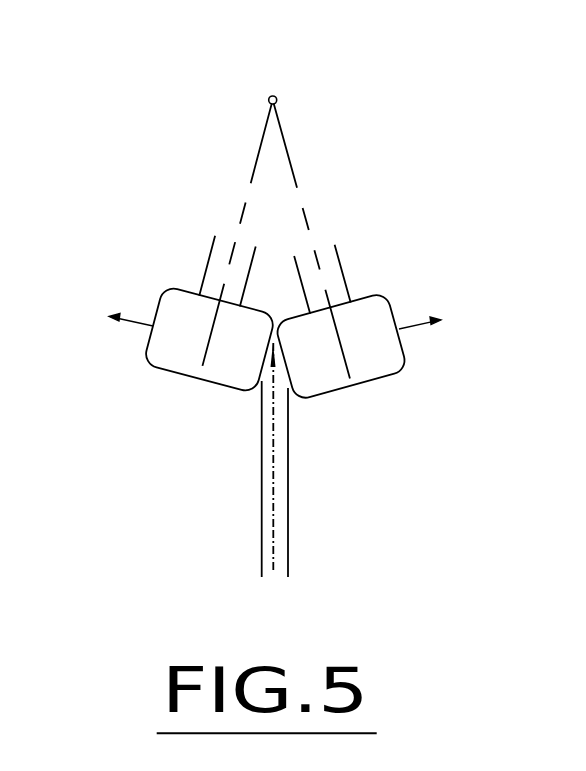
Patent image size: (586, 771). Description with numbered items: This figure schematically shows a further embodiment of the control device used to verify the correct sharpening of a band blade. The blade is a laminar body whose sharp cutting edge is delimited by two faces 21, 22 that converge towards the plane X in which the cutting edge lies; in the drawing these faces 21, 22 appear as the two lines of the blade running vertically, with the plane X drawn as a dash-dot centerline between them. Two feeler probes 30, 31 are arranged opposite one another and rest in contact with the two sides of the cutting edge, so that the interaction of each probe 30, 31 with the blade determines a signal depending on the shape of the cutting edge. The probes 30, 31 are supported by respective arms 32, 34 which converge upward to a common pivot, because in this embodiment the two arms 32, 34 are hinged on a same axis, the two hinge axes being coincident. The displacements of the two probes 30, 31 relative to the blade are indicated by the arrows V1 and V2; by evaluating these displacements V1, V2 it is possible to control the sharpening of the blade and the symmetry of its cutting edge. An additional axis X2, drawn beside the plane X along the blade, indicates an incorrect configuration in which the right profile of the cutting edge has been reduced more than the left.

The feeler probe 30 is at (153, 368).
The feeler probe 31 is at (373, 360).
The arm 32 is at (206, 265).
The arm 34 is at (337, 255).
The face 21 is at (261, 545).
The face 22 is at (288, 475).
The plane X is at (269, 522).
The axis X2 is at (285, 562).
The displacement of probe V1 is at (108, 314).
The displacement of probe V2 is at (445, 319).